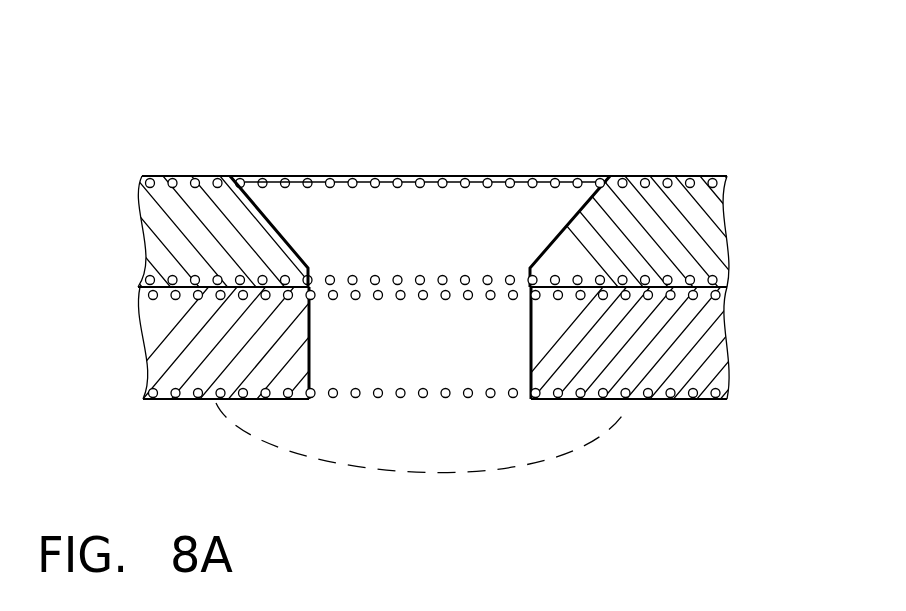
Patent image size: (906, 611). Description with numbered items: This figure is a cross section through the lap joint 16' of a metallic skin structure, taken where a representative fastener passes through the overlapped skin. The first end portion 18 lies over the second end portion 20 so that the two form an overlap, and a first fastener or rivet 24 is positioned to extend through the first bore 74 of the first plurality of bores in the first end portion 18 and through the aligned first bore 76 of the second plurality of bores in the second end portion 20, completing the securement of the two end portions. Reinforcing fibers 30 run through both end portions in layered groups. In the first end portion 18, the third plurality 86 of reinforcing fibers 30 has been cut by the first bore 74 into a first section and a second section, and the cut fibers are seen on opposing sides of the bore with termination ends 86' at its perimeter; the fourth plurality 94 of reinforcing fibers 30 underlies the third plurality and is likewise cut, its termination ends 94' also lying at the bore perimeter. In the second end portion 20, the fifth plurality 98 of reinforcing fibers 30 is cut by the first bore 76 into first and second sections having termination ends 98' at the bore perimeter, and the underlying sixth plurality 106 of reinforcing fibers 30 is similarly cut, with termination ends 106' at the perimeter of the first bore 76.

The lap joint 16' is at (433, 216).
The first end portion 18 is at (697, 225).
The second end portion 20 is at (697, 367).
The rivet 24 is at (495, 418).
The reinforcing fibers 30 is at (165, 192).
The first bore 74 is at (275, 238).
The first bore 76 is at (303, 339).
The third plurality of reinforcing fibers 86 is at (434, 143).
The termination ends 86' is at (426, 159).
The fourth plurality of reinforcing fibers 94 is at (654, 262).
The termination ends 94' is at (415, 259).
The fifth plurality of reinforcing fibers 98 is at (659, 313).
The termination ends 98' is at (423, 325).
The sixth plurality of reinforcing fibers 106 is at (398, 426).
The termination ends 106' is at (351, 456).